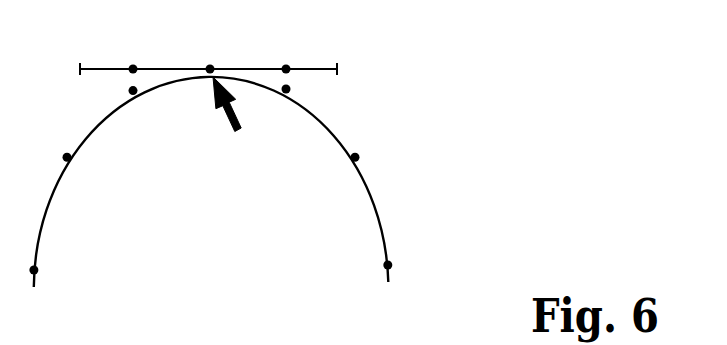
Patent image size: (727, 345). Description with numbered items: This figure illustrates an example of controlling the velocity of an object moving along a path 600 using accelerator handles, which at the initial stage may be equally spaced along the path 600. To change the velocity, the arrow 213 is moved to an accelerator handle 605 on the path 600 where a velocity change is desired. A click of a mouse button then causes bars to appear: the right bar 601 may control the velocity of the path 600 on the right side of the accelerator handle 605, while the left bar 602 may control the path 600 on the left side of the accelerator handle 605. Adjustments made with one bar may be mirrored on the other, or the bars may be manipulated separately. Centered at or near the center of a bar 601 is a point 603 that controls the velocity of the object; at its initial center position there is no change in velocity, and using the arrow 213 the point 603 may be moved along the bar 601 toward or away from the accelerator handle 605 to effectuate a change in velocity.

The path 600 is at (348, 135).
The right bar 601 is at (337, 62).
The left bar 602 is at (107, 68).
The point 603 is at (133, 66).
The accelerator handle 605 is at (210, 66).
The arrow 213 is at (238, 127).